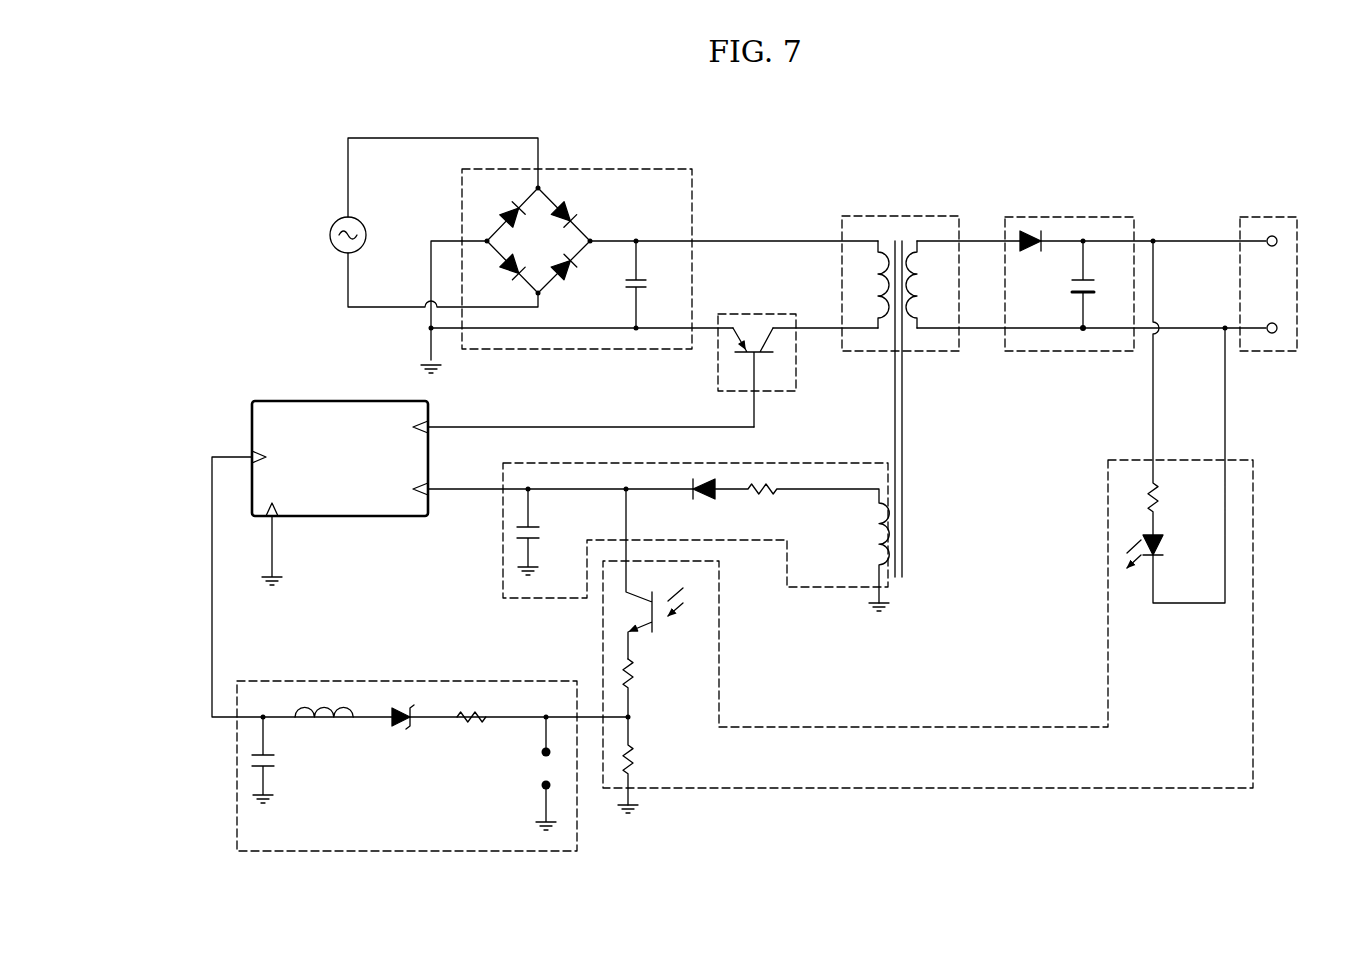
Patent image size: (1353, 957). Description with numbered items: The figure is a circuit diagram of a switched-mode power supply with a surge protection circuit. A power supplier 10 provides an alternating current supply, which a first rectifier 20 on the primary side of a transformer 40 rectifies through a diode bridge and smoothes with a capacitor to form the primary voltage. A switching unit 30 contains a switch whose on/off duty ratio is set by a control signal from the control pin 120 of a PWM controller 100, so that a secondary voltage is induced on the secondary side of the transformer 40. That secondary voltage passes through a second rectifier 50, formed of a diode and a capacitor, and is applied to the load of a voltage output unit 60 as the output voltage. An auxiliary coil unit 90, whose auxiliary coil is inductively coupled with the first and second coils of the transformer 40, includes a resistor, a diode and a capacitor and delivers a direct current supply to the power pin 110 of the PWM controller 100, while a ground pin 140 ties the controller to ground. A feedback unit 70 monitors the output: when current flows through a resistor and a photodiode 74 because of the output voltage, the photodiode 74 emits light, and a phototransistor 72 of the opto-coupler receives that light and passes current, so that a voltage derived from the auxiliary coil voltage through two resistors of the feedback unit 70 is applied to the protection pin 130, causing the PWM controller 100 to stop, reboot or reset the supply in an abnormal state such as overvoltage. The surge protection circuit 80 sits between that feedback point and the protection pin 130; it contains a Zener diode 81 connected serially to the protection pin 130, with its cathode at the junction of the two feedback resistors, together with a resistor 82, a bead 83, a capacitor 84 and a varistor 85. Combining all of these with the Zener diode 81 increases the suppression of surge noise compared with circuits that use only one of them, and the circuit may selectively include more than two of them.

The power supplier 10 is at (360, 226).
The first rectifier 20 is at (610, 169).
The switching unit 30 is at (754, 314).
The transformer 40 is at (898, 216).
The second rectifier 50 is at (1073, 217).
The voltage output unit 60 is at (1270, 217).
The feedback unit 70 is at (952, 526).
The phototransistor 72 is at (652, 625).
The photodiode 74 is at (1162, 552).
The surge protection circuit 80 is at (407, 752).
The Zener diode 81 is at (414, 724).
The resistor 82 is at (470, 722).
The bead 83 is at (330, 722).
The capacitor 84 is at (277, 762).
The varistor 85 is at (535, 773).
The auxiliary coil unit 90 is at (680, 463).
The PWM controller 100 is at (338, 401).
The power pin 110 is at (432, 485).
The control pin 120 is at (432, 423).
The protection pin 130 is at (252, 455).
The ground pin 140 is at (280, 521).